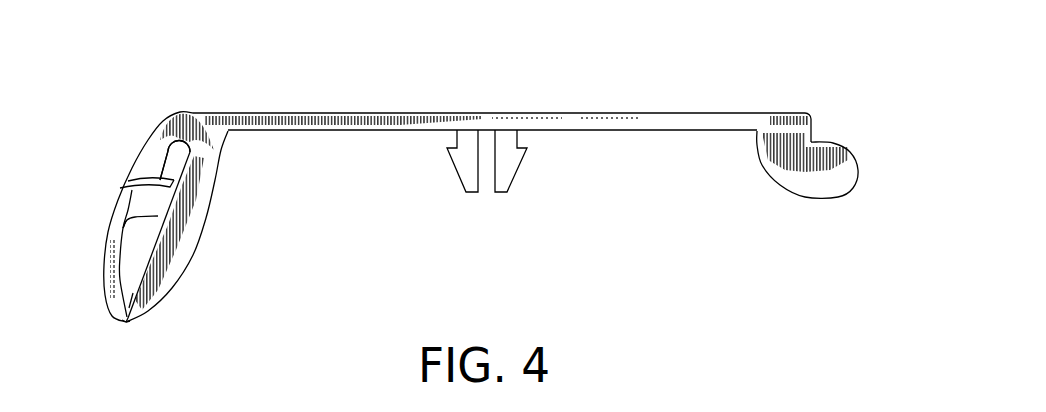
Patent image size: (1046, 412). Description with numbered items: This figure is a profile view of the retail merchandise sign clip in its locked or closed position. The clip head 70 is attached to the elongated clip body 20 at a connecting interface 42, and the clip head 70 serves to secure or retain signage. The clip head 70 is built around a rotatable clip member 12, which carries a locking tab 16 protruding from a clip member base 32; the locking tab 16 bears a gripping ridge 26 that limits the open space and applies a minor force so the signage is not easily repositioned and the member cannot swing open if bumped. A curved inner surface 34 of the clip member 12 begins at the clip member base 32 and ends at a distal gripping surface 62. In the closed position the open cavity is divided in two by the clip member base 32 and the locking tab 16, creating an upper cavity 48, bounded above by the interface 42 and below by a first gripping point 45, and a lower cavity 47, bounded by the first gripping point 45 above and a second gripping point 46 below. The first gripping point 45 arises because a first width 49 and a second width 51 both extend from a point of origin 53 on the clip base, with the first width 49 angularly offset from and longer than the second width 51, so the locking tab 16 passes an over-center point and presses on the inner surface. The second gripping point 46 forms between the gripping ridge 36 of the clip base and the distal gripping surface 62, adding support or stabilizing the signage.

The rotatable clip member 12 is at (112, 288).
The locking tab 16 is at (173, 192).
The clip body 20 is at (378, 113).
The gripping ridge 26 is at (163, 167).
The clip member base 32 is at (140, 185).
The curved inner surface 34 is at (127, 275).
The gripping ridge 36 is at (128, 314).
The connecting interface 42 is at (183, 112).
The first gripping point 45 is at (181, 193).
The second gripping point 46 is at (138, 334).
The lower cavity 47 is at (159, 245).
The upper cavity 48 is at (175, 140).
The first width 49 is at (159, 196).
The second width 51 is at (125, 225).
The point of origin 53 is at (147, 214).
The distal gripping surface 62 is at (122, 327).
The clip head 70 is at (285, 155).